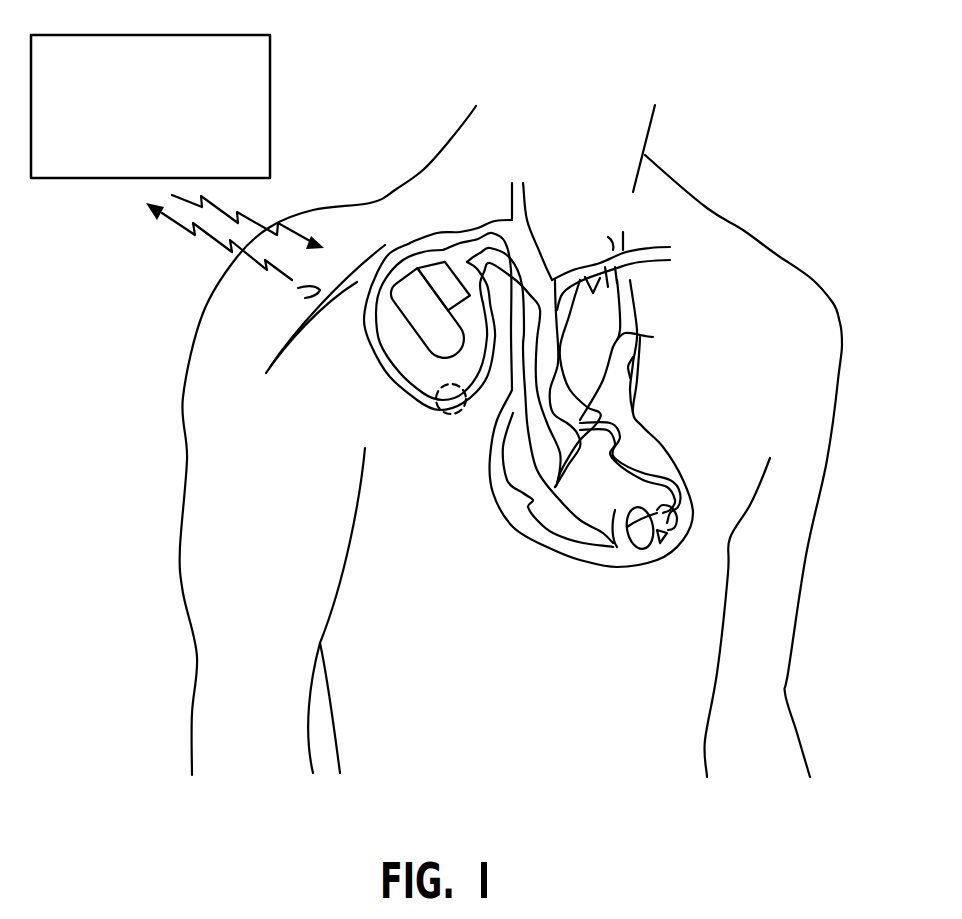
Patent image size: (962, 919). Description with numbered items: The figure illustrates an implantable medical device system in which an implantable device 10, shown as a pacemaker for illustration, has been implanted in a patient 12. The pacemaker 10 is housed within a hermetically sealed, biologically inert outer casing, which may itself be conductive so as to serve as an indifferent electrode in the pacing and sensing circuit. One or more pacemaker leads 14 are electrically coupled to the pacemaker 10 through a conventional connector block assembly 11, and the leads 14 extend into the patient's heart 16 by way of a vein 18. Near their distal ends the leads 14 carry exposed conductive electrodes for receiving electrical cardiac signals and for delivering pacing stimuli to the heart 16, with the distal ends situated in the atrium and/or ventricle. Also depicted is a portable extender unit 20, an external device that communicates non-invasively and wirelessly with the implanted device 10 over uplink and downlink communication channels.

The implantable device 10 is at (400, 333).
The connector block assembly 11 is at (434, 278).
The patient 12 is at (745, 229).
The pacemaker leads 14 is at (452, 414).
The heart 16 is at (603, 567).
The vein 18 is at (390, 243).
The portable extender unit 20 is at (270, 47).